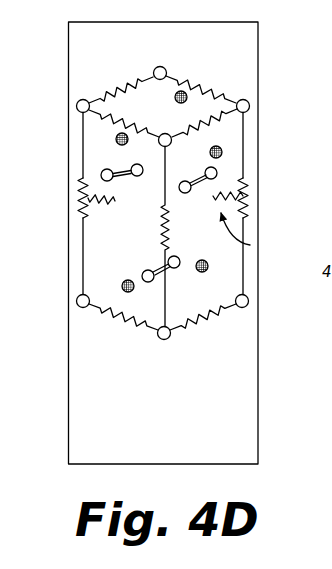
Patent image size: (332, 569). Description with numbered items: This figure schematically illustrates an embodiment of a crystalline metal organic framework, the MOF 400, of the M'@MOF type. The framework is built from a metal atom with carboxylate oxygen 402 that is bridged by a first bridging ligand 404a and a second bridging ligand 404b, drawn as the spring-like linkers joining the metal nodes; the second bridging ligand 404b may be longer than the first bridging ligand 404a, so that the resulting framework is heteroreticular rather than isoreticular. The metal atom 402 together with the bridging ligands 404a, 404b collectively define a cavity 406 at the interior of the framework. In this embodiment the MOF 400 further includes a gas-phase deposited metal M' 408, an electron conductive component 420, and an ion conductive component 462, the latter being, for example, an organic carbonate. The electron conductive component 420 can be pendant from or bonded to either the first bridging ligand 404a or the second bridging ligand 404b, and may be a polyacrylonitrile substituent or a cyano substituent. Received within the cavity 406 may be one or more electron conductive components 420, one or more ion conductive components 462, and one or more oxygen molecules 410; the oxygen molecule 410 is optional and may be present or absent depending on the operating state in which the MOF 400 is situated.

The metal organic framework (MOF) 400 is at (59, 380).
The metal atom with carboxylate oxygen 402 is at (156, 67).
The first bridging ligand 404a is at (205, 86).
The second bridging ligand 404b is at (243, 188).
The cavity 406 is at (177, 305).
The gas-phase deposited metal (M') 408 is at (208, 271).
The oxygen molecule 410 is at (177, 268).
The electron conductive component 420 is at (92, 214).
The ion conductive component 462 is at (250, 245).